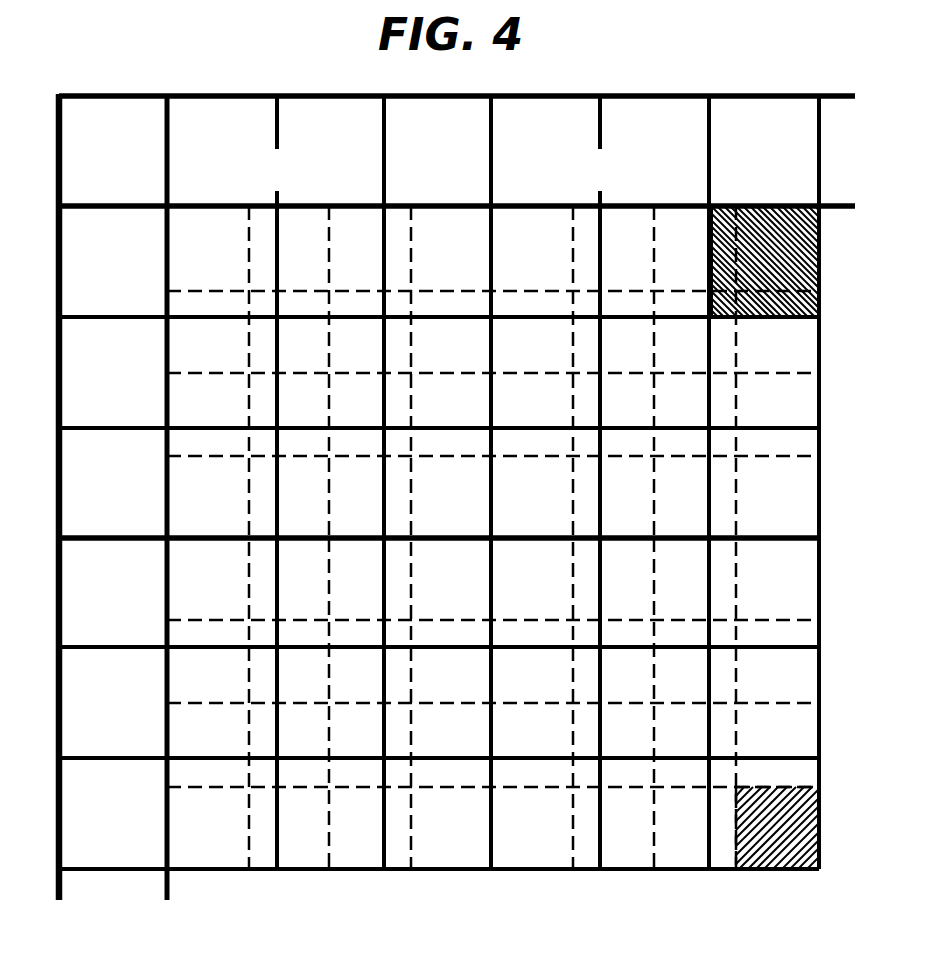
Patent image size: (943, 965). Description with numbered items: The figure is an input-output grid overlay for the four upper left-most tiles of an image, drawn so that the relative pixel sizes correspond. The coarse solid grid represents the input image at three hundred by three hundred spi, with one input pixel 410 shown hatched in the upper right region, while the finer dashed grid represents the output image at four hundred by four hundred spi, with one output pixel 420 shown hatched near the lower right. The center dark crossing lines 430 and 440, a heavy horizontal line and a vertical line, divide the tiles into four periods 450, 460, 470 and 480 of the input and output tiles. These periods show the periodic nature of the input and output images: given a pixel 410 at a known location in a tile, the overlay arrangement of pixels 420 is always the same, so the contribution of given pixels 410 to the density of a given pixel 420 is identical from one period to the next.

The input pixel 410 is at (810, 253).
The output pixel 420 is at (800, 827).
The center dark crossing line 430 is at (187, 536).
The center dark crossing line 440 is at (487, 846).
The period 450 is at (330, 190).
The period 460 is at (655, 193).
The period 470 is at (327, 882).
The period 480 is at (652, 884).